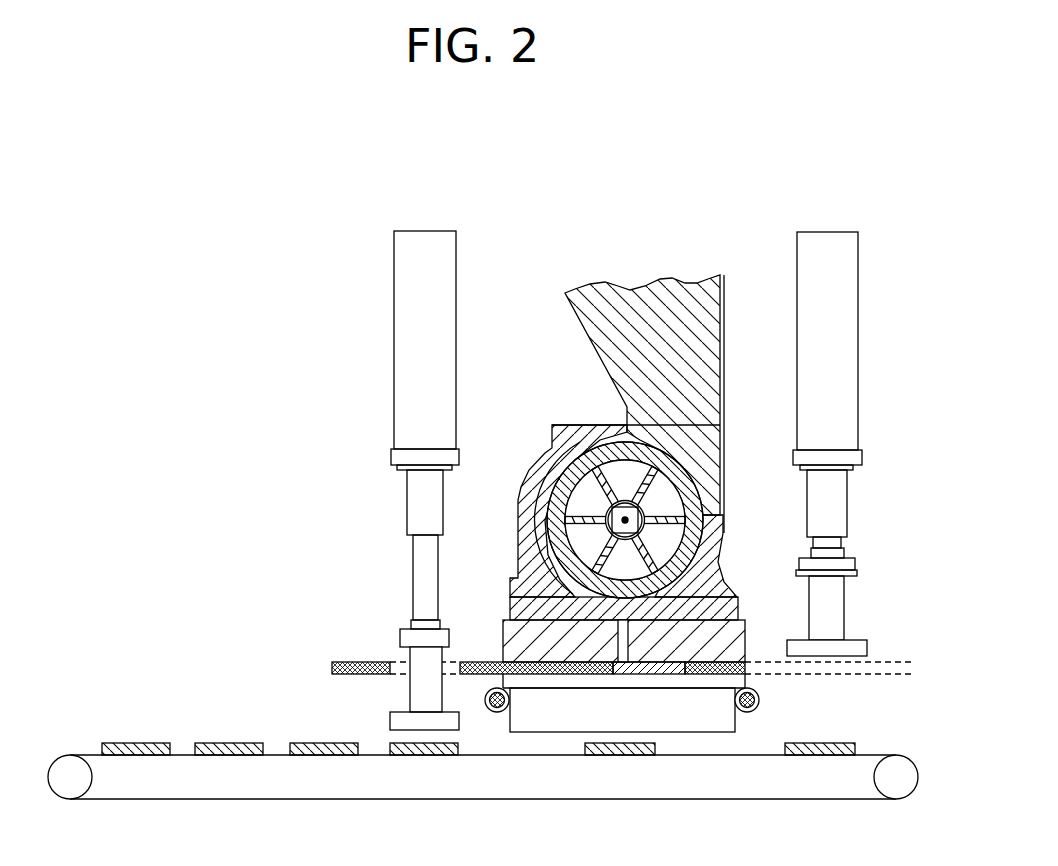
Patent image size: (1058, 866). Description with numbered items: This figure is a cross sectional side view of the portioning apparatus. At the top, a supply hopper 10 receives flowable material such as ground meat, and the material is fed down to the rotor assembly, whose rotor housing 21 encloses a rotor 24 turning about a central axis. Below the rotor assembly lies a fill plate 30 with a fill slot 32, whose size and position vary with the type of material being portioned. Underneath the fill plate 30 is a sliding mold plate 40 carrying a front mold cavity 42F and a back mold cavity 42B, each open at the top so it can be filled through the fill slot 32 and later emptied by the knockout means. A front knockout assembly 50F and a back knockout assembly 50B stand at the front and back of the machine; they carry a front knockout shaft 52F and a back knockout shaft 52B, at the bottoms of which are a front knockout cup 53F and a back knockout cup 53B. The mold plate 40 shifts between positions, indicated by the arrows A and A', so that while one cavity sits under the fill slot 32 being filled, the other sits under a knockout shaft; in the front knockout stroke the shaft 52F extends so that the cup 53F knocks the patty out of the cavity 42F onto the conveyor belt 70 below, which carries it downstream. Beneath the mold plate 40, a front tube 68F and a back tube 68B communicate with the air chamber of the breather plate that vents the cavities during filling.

The supply hopper 10 is at (583, 328).
The rotor housing 21 is at (543, 478).
The rotor 24 is at (590, 543).
The fill plate 30 is at (507, 620).
The fill slot 32 is at (633, 648).
The mold plate 40 is at (337, 660).
The front mold cavity 42F is at (393, 660).
The back mold cavity 42B is at (652, 676).
The front knockout assembly 50F is at (378, 365).
The back knockout assembly 50B is at (760, 263).
The front knockout shaft 52F is at (413, 580).
The back knockout shaft 52B is at (846, 595).
The front knockout cup 53F is at (402, 632).
The back knockout cup 53B is at (857, 641).
The front tube 68F is at (497, 712).
The back tube 68B is at (748, 712).
The conveyor belt 70 is at (203, 788).
The direction A is at (878, 523).
The direction A' is at (348, 700).